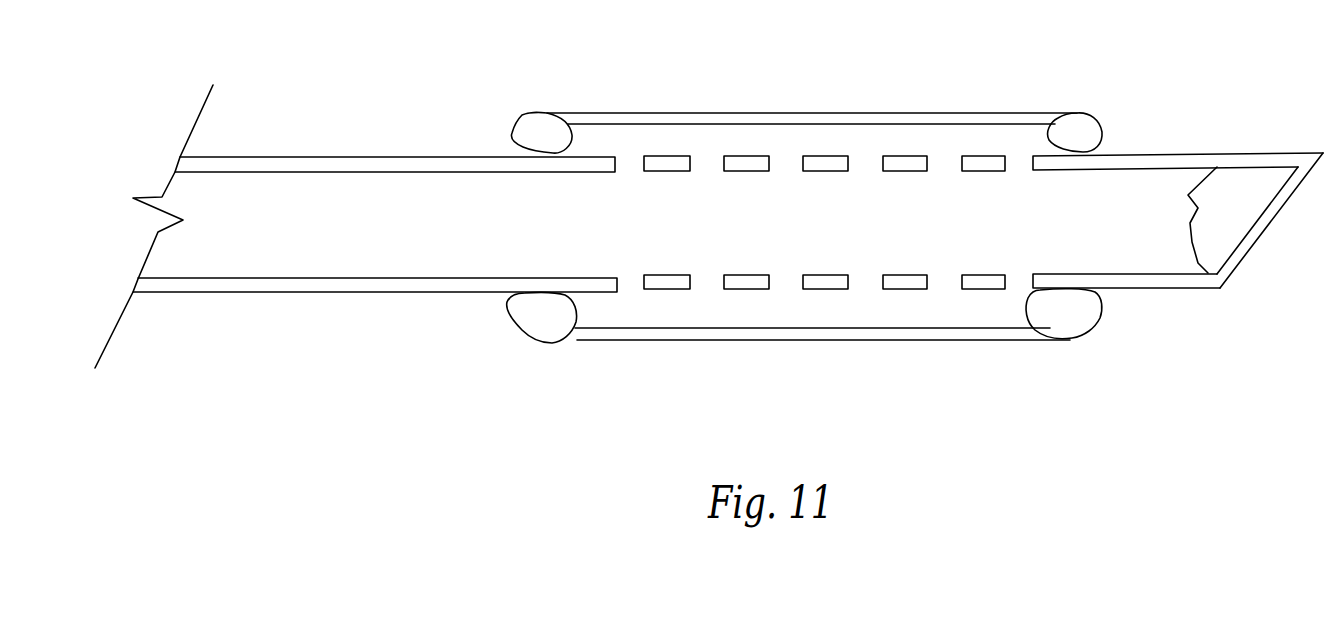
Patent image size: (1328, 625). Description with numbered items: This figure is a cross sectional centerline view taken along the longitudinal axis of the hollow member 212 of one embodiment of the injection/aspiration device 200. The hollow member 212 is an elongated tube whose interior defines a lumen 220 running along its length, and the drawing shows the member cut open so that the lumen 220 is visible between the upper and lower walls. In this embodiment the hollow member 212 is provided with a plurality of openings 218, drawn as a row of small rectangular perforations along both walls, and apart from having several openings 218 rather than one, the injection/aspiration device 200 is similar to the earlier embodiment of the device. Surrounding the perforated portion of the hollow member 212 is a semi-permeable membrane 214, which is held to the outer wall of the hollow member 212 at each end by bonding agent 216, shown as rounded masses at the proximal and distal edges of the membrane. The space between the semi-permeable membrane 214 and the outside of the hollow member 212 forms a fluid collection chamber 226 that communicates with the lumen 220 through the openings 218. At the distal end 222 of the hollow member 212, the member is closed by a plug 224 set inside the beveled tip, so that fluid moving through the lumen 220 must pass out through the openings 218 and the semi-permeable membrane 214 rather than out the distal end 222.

The injection/aspiration device 200 is at (613, 412).
The hollow member 212 is at (246, 283).
The semi-permeable membrane 214 is at (938, 113).
The bonding agent 216 is at (535, 318).
The opening 218 is at (782, 155).
The lumen 220 is at (368, 208).
The distal end 222 is at (1272, 227).
The plug 224 is at (1235, 175).
The fluid collection chamber 226 is at (873, 313).